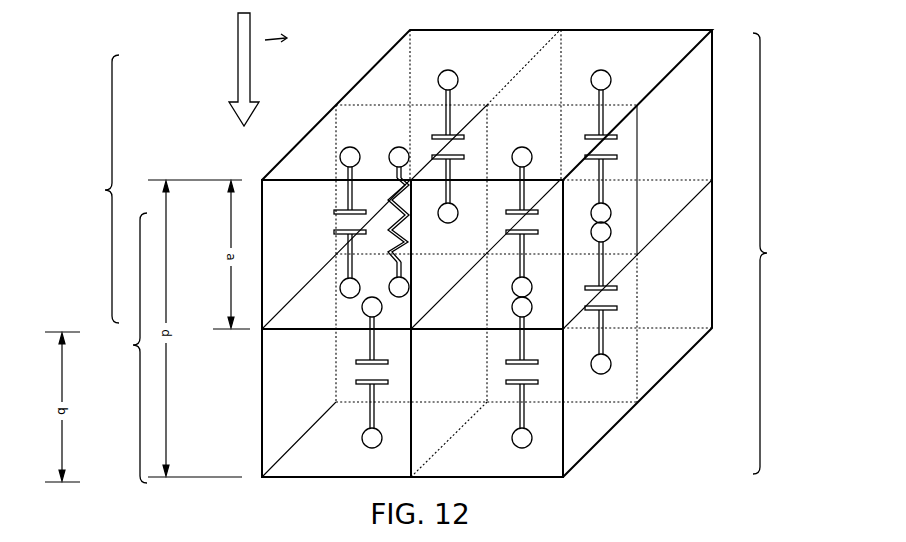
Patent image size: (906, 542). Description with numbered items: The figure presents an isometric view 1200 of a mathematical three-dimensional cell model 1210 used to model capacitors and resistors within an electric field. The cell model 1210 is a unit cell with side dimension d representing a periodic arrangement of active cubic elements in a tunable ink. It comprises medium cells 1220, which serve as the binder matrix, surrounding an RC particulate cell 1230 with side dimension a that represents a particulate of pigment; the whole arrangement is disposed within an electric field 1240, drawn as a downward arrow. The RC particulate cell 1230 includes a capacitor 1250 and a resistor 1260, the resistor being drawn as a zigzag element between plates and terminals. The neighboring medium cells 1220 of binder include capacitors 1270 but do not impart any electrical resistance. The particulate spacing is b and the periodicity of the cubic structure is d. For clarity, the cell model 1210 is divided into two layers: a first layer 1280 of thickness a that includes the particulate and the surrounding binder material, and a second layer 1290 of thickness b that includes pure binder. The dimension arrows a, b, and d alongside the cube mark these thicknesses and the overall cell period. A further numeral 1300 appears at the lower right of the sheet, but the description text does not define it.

The isometric view 1200 is at (178, 75).
The cell model 1210 is at (779, 253).
The medium cells 1220 is at (255, 424).
The RC particulate cell 1230 is at (314, 268).
The electric field 1240 is at (249, 80).
The capacitor 1250 is at (330, 206).
The resistor 1260 is at (396, 181).
The capacitors 1270 is at (530, 232).
The first layer 1280 is at (92, 189).
The second layer 1290 is at (120, 348).
The arrangement 1300 is at (690, 533).